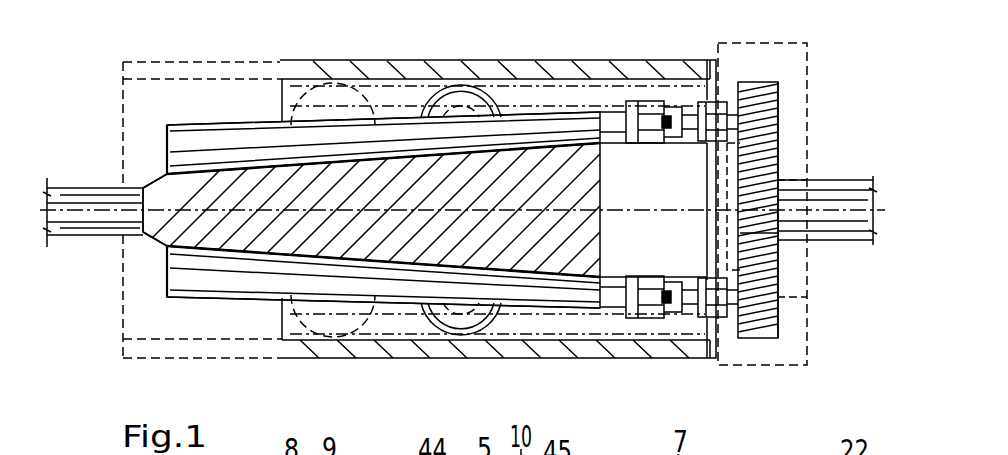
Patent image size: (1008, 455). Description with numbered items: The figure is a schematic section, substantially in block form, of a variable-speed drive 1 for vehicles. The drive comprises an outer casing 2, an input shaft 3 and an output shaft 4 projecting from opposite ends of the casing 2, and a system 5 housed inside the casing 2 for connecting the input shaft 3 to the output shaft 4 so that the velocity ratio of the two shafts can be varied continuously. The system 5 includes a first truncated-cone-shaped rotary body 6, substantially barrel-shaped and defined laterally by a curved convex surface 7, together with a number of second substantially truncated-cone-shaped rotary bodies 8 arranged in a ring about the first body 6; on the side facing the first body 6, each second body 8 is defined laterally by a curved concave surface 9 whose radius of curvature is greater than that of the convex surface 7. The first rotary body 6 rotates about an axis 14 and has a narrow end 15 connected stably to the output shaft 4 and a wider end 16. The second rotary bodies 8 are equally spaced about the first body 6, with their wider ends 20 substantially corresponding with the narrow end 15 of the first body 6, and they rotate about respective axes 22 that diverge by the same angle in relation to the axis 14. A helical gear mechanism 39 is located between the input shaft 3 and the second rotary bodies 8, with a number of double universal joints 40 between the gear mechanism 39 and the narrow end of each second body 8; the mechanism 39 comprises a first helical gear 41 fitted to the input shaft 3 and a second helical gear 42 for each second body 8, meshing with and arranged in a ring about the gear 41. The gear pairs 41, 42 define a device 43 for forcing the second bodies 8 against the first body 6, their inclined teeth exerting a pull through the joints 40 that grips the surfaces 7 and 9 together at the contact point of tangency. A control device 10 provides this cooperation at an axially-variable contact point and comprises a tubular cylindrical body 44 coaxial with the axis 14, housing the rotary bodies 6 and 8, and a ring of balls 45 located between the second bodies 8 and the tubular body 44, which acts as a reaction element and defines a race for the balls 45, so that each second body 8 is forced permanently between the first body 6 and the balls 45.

The variable-speed drive 1 is at (728, 63).
The outer casing 2 is at (808, 342).
The input shaft 3 is at (848, 193).
The output shaft 4 is at (83, 222).
The system 5 is at (518, 100).
The first truncated-cone-shaped rotary body 6 is at (705, 174).
The curved convex surface 7 is at (222, 168).
The second truncated-cone-shaped rotary bodies 8 is at (245, 138).
The curved concave surface 9 is at (227, 120).
The control device 10 is at (440, 89).
The axis 14 is at (46, 249).
The narrow end 15 is at (160, 234).
The wider end 16 is at (605, 248).
The wider ends 20 is at (163, 138).
The axes 22 is at (167, 152).
The helical gear mechanism 39 is at (793, 119).
The double universal joints 40 is at (647, 99).
The first helical gear 41 is at (765, 233).
The second helical gear 42 is at (770, 90).
The device for forcing second bodies against first body 43 is at (782, 170).
The tubular cylindrical body 44 is at (560, 63).
The balls 45 is at (338, 92).